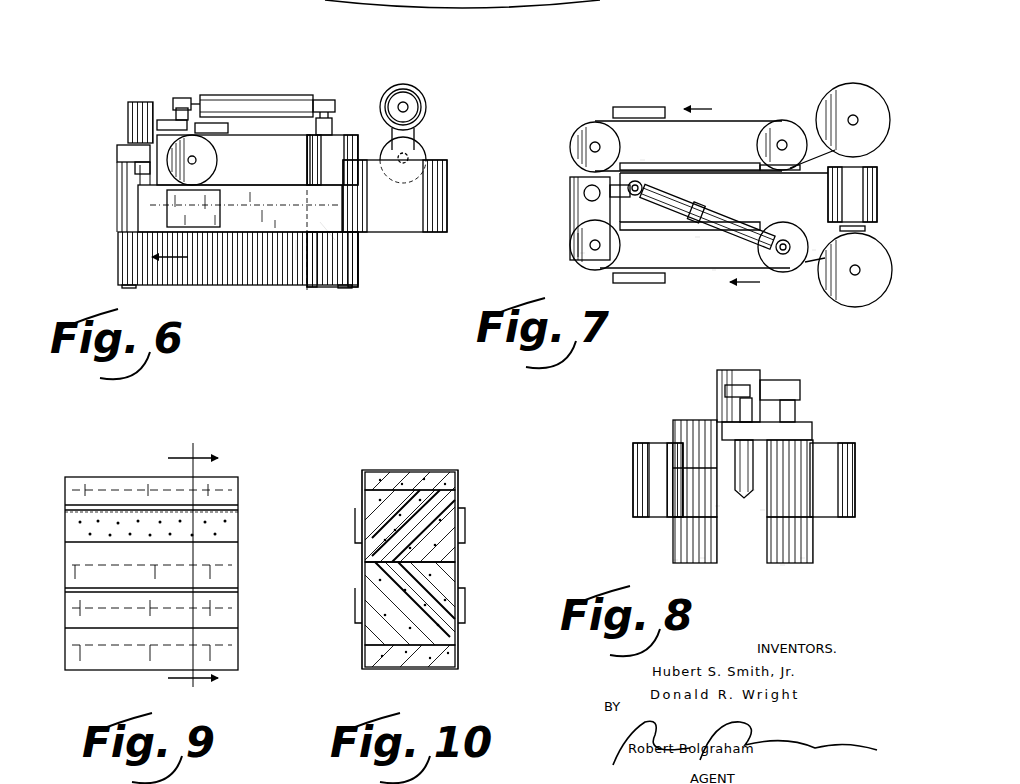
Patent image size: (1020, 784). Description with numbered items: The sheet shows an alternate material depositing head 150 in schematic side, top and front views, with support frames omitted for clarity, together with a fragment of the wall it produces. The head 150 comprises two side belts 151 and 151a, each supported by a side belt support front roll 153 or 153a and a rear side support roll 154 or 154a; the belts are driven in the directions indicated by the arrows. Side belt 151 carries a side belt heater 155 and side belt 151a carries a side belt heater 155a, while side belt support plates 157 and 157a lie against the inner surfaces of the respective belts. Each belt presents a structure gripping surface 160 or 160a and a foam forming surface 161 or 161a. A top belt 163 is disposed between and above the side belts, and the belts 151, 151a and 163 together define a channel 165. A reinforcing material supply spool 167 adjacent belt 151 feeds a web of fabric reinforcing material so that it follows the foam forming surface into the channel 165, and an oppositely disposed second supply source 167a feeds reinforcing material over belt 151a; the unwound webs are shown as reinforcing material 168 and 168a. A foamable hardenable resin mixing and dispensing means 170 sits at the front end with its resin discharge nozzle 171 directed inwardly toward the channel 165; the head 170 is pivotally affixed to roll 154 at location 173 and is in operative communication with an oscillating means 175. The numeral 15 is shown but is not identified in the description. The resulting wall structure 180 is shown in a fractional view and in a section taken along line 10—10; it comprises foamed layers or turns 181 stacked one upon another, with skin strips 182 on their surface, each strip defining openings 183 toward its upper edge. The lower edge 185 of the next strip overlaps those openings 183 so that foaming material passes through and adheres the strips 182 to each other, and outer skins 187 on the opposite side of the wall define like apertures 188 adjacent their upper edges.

In FIG. 6, the material depositing head 150 is at (96, 135).
In FIG. 7, the material depositing head 150 is at (708, 76).
In FIG. 8, the material depositing head 150 is at (618, 432).
In FIG. 6, the foamable hardenable resin mixing and dispensing means 170 is at (131, 118).
In FIG. 7, the foamable hardenable resin mixing and dispensing means 170 is at (585, 190).
In FIG. 8, the foamable hardenable resin mixing and dispensing means 170 is at (740, 458).
In FIG. 6, the oscillating means 175 is at (238, 95).
In FIG. 7, the oscillating means 175 is at (700, 207).
In FIG. 6, the top belt 163 is at (296, 145).
In FIG. 7, the top belt 163 is at (800, 204).
In FIG. 8, the top belt 163 is at (720, 415).
In FIG. 6, the side belt heater 155 is at (218, 210).
In FIG. 7, the side belt heater 155 is at (650, 284).
In FIG. 6, the reinforcing material supply source or spool 167 is at (430, 207).
In FIG. 7, the reinforcing material supply source or spool 167 is at (872, 292).
In FIG. 8, the reinforcing material supply source or spool 167 is at (640, 478).
In FIG. 6, the unwound reinforcing material 168 is at (355, 218).
In FIG. 7, the unwound reinforcing material 168 is at (812, 250).
In FIG. 6, the foam forming surface 161 is at (322, 222).
In FIG. 8, the foam forming surface 161 is at (718, 506).
In FIG. 6, the rear side support belt or roll 154 is at (125, 286).
In FIG. 7, the rear side support belt or roll 154 is at (595, 270).
In FIG. 6, the structure gripping surface 160 is at (210, 270).
In FIG. 8, the structure gripping surface 160 is at (685, 540).
In FIG. 6, the side belt 151 is at (300, 240).
In FIG. 7, the side belt 151 is at (712, 270).
In FIG. 8, the side belt 151 is at (700, 557).
In FIG. 6, the side belt support front roll 153 is at (345, 287).
In FIG. 7, the side belt support front roll 153 is at (786, 272).
In FIG. 8, the side belt support front roll 153 is at (672, 558).
In FIG. 7, the side belt heater 155a is at (642, 105).
In FIG. 7, the rear side support belt or roll 154a is at (588, 130).
In FIG. 7, the side belt 151a is at (772, 118).
In FIG. 8, the side belt 151a is at (800, 557).
In FIG. 7, the side belt support front roll 153a is at (782, 122).
In FIG. 8, the side belt support front roll 153a is at (785, 565).
In FIG. 7, the unwound reinforcing material 168a is at (806, 135).
In FIG. 7, the second reinforcing material supply source 167a is at (858, 95).
In FIG. 8, the second reinforcing material supply source 167a is at (843, 446).
In FIG. 7, the member 15 is at (640, 160).
In FIG. 7, the side belt support plate 157a is at (730, 163).
In FIG. 7, the side belt support plate 157 is at (695, 237).
In FIG. 7, the pivot location 173 is at (580, 252).
In FIG. 8, the channel 165 is at (712, 500).
In FIG. 8, the resin discharge nozzle 171 is at (752, 488).
In FIG. 8, the structure gripping surface 160a is at (812, 553).
In FIG. 8, the foam forming surface 161a is at (763, 510).
In FIG. 9, the wall structure 180 is at (114, 465).
In FIG. 10, the wall structure 180 is at (384, 458).
In FIG. 9, the foamed layers or turns 181 is at (75, 492).
In FIG. 10, the foamed layers or turns 181 is at (412, 470).
In FIG. 9, the skin or surface strips 182 is at (230, 482).
In FIG. 10, the skin or surface strips 182 is at (458, 478).
In FIG. 9, the openings 183 is at (218, 530).
In FIG. 10, the openings 183 is at (465, 535).
In FIG. 10, the lower edge 185 is at (466, 523).
In FIG. 10, the outer skins 187 is at (362, 488).
In FIG. 10, the apertures 188 is at (362, 552).
In FIG. 9, the section line 10 is at (182, 570).